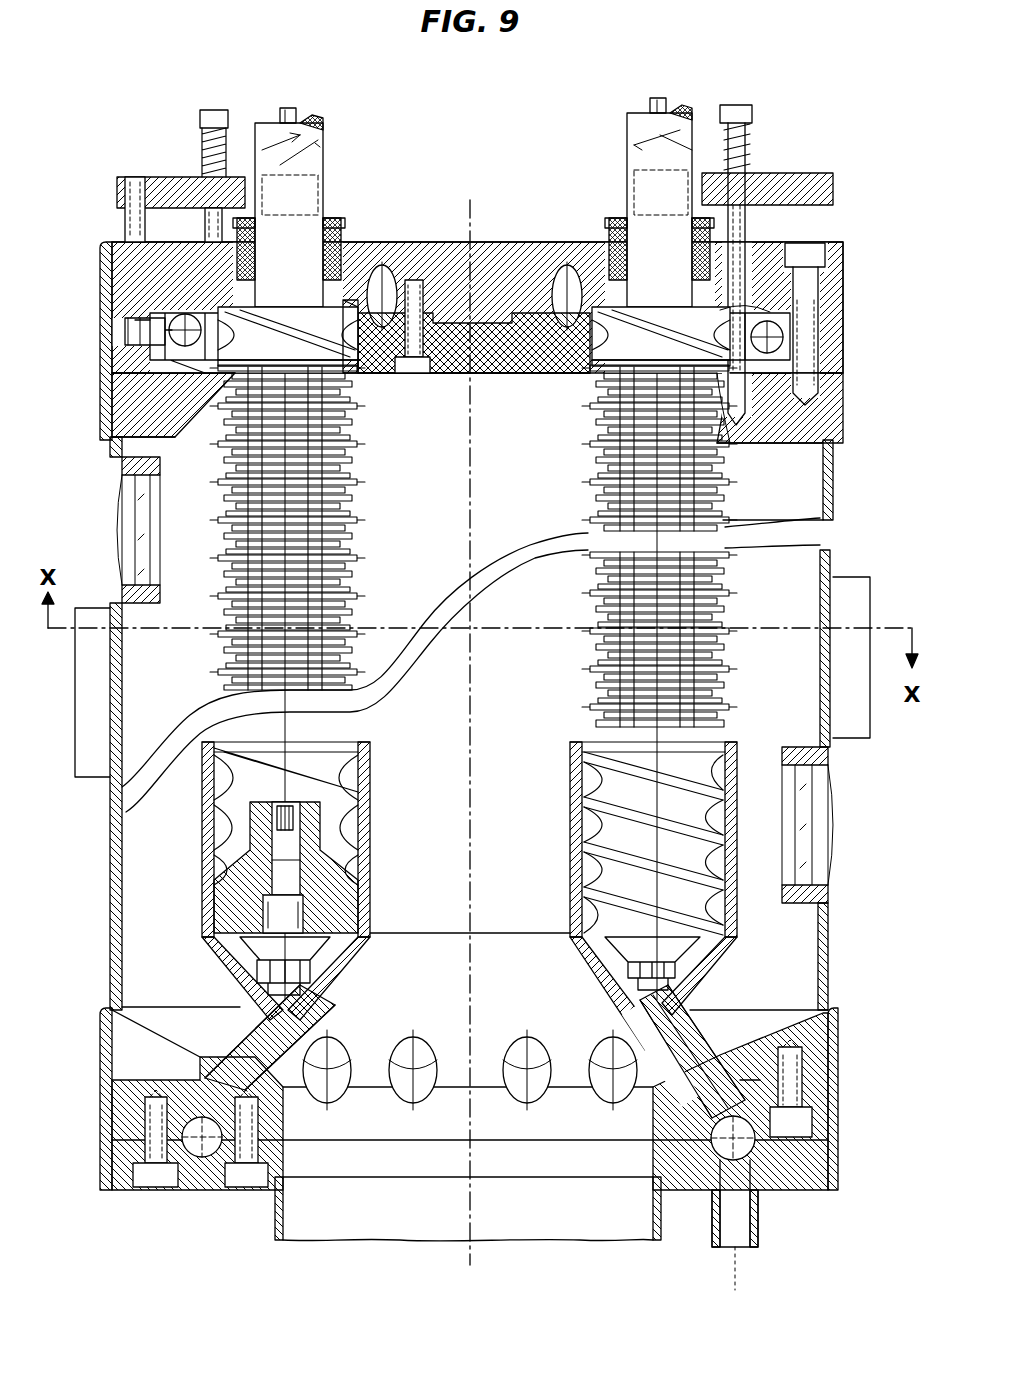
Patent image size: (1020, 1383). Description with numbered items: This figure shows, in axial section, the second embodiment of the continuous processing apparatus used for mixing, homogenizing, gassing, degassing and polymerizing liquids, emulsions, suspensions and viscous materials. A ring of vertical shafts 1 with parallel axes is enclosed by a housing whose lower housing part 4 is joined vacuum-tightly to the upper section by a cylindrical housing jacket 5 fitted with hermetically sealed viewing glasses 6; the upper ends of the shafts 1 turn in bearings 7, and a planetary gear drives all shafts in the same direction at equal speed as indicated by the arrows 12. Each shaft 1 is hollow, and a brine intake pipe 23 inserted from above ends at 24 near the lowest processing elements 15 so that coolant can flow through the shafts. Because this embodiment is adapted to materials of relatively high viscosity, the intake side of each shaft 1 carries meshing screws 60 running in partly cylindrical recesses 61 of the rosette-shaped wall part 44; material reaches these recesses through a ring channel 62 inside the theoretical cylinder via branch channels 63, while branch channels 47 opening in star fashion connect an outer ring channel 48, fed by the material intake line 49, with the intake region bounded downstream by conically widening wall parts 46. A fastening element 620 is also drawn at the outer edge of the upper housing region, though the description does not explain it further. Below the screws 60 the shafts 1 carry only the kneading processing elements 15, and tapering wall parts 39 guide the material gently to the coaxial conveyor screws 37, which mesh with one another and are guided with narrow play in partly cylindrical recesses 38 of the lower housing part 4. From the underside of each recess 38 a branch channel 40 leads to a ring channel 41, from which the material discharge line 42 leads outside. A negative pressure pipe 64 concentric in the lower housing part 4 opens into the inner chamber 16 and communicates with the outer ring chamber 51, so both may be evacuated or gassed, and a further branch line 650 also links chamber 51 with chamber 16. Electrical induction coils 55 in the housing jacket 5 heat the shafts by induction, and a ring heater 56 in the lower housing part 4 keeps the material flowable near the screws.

The shafts 1 is at (262, 126).
The lower housing part 4 is at (810, 1190).
The housing jacket 5 is at (828, 975).
The viewing glasses 6 is at (140, 545).
The bearings 7 is at (345, 245).
The arrows 12 is at (318, 124).
The processing elements 15 is at (350, 525).
The inner chamber 16 is at (450, 694).
The brine intake pipes 23 is at (285, 108).
The end of brine intake pipe 24 is at (260, 840).
The conveyor screw 37 is at (362, 828).
The partly cylindrical recess 38 is at (222, 865).
The tapering wall parts 39 is at (590, 735).
The branch channel 40 is at (708, 1055).
The ring channel 41 is at (196, 1160).
The material discharge line 42 is at (726, 1250).
The wall part 44 is at (512, 375).
The conically widening wall parts 46 is at (352, 380).
The branch channel 47 is at (740, 372).
The ring channel 48 is at (785, 340).
The material intake line 49 is at (125, 330).
The ring chamber 51 is at (784, 600).
The electrical induction coils 55 is at (88, 746).
The ring heater 56 is at (102, 400).
The meshing screws 60 is at (295, 325).
The partly cylindrical recesses 61 is at (232, 375).
The ring channel 62 is at (560, 268).
The branch channels 63 is at (360, 375).
The negative pressure pipe 64 is at (368, 1242).
The fixing bolt 620 is at (818, 305).
The branch line 650 is at (243, 1050).